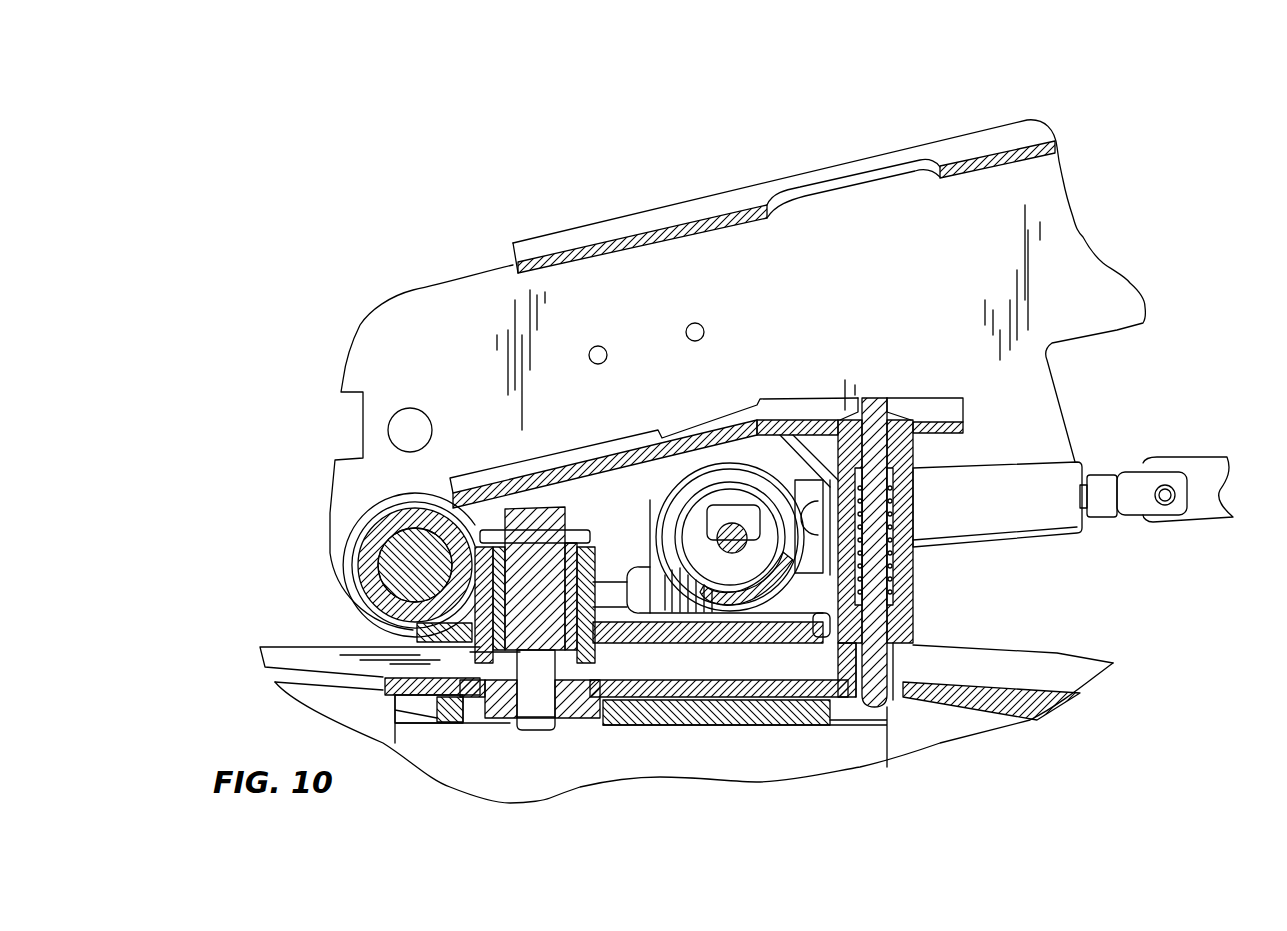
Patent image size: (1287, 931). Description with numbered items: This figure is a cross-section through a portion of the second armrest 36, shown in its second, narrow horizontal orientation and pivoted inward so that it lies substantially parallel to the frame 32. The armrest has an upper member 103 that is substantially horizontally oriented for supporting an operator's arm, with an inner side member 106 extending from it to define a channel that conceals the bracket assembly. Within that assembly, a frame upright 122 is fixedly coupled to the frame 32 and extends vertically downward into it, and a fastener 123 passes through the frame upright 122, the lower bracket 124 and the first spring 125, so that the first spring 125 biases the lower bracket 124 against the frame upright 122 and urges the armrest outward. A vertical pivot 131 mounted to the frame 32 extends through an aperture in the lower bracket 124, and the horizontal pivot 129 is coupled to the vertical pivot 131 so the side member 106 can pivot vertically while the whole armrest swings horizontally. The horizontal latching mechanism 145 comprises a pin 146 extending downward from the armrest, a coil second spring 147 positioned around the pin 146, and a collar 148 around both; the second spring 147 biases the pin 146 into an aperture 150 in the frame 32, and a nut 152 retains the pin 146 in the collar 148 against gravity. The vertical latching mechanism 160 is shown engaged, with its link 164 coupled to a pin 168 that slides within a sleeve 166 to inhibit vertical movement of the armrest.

The second armrest 36 is at (1024, 88).
The upper member 103 is at (753, 195).
The inner side member 106 is at (1072, 255).
The nut 152 is at (892, 395).
The vertical latching mechanism 160 is at (1102, 442).
The link 164 is at (1200, 468).
The horizontal latching mechanism 145 is at (940, 456).
The first spring 125 is at (763, 488).
The vertical pivot 131 is at (558, 512).
The fastener 123 is at (733, 550).
The pin 168 is at (815, 525).
The second spring 147 is at (915, 573).
The collar 148 is at (912, 608).
The horizontal pivot 129 is at (383, 602).
The sleeve 166 is at (1050, 527).
The frame 32 is at (1077, 667).
The lower bracket 124 is at (623, 618).
The frame upright 122 is at (650, 660).
The pin 146 is at (895, 662).
The aperture 150 is at (896, 700).